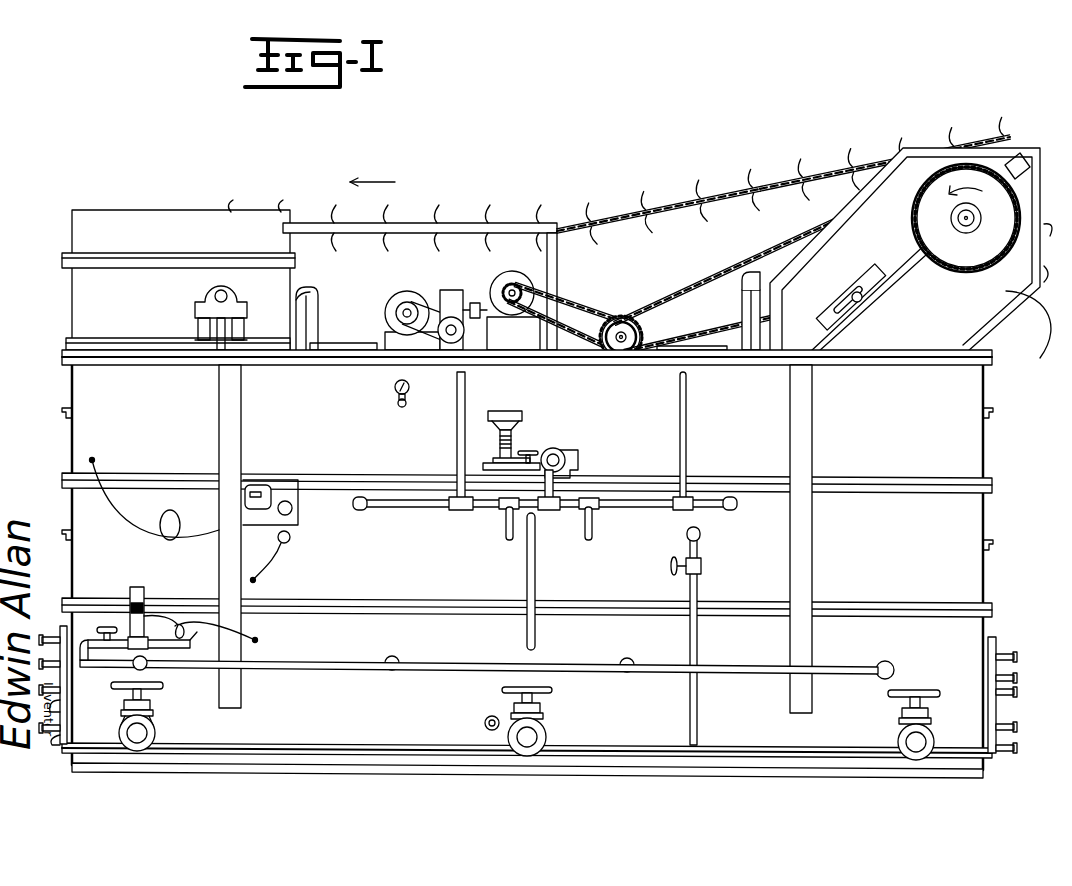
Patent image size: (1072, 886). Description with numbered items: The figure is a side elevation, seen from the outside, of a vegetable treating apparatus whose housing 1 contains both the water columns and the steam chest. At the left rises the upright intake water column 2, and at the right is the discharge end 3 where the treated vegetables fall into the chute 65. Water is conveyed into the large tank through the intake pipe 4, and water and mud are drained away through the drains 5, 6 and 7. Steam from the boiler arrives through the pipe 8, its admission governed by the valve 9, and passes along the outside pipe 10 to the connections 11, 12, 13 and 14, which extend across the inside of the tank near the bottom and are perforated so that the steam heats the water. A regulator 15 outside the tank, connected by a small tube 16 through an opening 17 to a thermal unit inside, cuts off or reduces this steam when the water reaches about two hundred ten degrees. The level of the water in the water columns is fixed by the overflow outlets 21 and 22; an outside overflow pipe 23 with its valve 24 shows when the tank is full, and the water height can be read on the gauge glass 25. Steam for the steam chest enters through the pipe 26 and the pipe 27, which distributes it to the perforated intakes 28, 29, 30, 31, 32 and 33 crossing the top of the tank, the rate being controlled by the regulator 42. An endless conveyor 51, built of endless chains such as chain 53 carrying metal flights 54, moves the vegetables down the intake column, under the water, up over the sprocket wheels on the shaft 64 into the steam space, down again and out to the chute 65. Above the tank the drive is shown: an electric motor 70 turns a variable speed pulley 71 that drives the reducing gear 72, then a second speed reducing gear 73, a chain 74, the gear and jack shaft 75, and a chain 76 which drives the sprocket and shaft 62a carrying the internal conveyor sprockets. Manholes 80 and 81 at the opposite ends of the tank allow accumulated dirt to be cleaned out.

The housing 1 is at (75, 400).
The upright intake water column 2 is at (72, 233).
The discharge end 3 is at (1045, 247).
The intake pipe 4 is at (484, 722).
The drain 5 is at (156, 723).
The drain 6 is at (546, 722).
The drain 7 is at (930, 715).
The steam pipe 8 is at (168, 649).
The steam valve 9 is at (107, 627).
The steam feed pipe 10 is at (423, 661).
The steam connection 11 is at (133, 665).
The steam connection 12 is at (391, 671).
The steam connection 13 is at (631, 672).
The steam connection 14 is at (894, 667).
The regulator 15 is at (143, 589).
The small tube 16 is at (191, 618).
The opening 17 is at (258, 641).
The overflow outlet 21 is at (229, 375).
The overflow outlet 22 is at (813, 406).
The overflow pipe 23 is at (699, 592).
The valve 24 is at (671, 562).
The gauge glass 25 is at (536, 590).
The steam pipe 26 is at (488, 462).
The distribution pipe 27 is at (633, 508).
The steam intake 28 is at (466, 382).
The steam intake 29 is at (687, 388).
The steam intake 30 is at (357, 517).
The steam intake 31 is at (738, 507).
The steam intake 32 is at (505, 530).
The steam intake 33 is at (590, 536).
The regulator 42 is at (571, 413).
The endless conveyor 51 is at (617, 222).
The endless chain 53 is at (800, 186).
The metal flights 54 is at (700, 202).
The sprocket and shaft 62a is at (968, 227).
The shaft 64 is at (565, 458).
The chute 65 is at (1040, 360).
The electric motor 70 is at (395, 305).
The variable speed pulley 71 is at (410, 301).
The reducing gear 72 is at (452, 292).
The second speed reducing gear 73 is at (514, 278).
The chain 74 is at (586, 297).
The jack shaft 75 is at (638, 333).
The chain 76 is at (760, 255).
The manhole 80 is at (60, 628).
The manhole 81 is at (1006, 708).